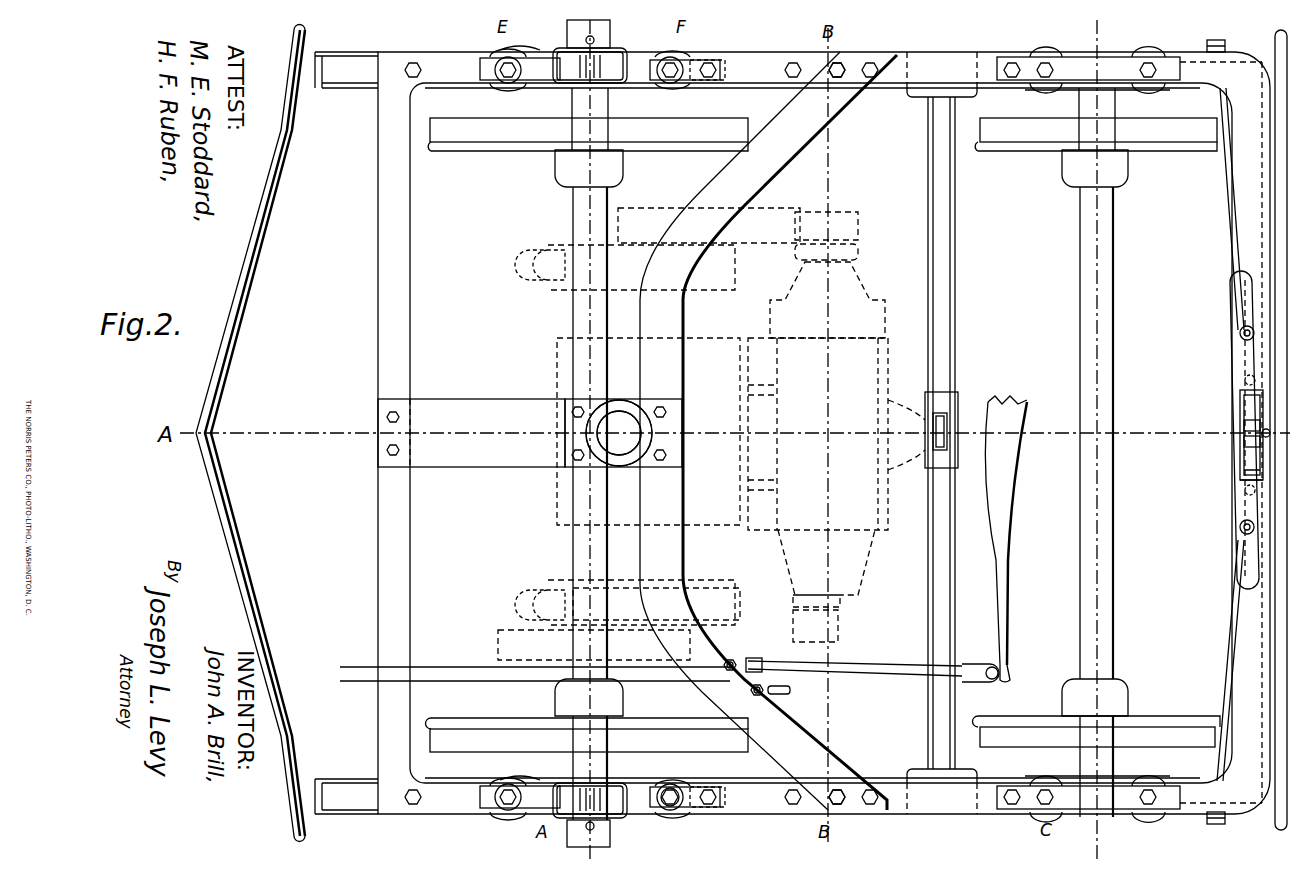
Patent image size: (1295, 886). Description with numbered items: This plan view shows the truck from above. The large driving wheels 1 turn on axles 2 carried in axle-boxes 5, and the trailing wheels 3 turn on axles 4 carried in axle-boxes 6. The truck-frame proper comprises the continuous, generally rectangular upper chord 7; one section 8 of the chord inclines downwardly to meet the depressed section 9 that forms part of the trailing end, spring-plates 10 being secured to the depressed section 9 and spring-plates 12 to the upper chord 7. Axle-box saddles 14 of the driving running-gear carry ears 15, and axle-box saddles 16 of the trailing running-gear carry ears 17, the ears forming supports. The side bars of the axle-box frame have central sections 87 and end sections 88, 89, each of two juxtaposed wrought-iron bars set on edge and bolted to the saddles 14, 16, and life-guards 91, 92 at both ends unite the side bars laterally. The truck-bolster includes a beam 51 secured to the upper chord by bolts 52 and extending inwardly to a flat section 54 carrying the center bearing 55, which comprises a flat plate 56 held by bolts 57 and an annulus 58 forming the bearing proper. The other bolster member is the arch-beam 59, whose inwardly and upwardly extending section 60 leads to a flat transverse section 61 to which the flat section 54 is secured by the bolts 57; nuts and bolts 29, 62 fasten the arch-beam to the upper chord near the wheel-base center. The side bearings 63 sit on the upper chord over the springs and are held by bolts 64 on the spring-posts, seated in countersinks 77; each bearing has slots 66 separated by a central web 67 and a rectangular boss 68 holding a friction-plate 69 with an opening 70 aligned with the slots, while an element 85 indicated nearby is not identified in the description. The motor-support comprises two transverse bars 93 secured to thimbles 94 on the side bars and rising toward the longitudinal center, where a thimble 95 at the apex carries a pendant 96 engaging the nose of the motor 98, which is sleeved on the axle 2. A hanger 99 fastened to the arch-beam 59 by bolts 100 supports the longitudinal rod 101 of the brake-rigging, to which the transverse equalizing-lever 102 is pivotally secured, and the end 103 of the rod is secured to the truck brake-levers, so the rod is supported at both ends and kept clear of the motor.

The large or driving wheels 1 is at (587, 435).
The axles for the driving wheels 2 is at (589, 440).
The trailing wheels 3 is at (1140, 725).
The axles for the trailing wheels 4 is at (1095, 563).
The axle-boxes for the driving-wheels 5 is at (608, 38).
The axle-boxes for the trailing wheels 6 is at (1120, 831).
The upper chord 7 is at (824, 433).
The inclined section of the upper chord 8 is at (942, 433).
The depressed section of the upper chord 9 is at (1218, 330).
The spring-plates 10 is at (1074, 52).
The spring-plates 12 is at (525, 404).
The axle-box saddles of the driving-wheel running-gear 14 is at (545, 57).
The ears or projections 15 is at (598, 435).
The axle-box saddles for the trailing wheels 16 is at (1097, 433).
The ears or projections 17 is at (1093, 443).
The nuts 29 is at (786, 70).
The bolster-beam 51 is at (471, 445).
The bolts 52 is at (387, 417).
The flat section of the bolster-beam 54 is at (676, 428).
The center bearing 55 is at (619, 433).
The flat plate 56 is at (600, 403).
The bolts 57 is at (667, 408).
The annulus 58 is at (633, 412).
The arch-beam 59 is at (648, 431).
The inwardly and upwardly extending section of the arch-beam 60 is at (768, 431).
The flat transverse section of the arch-beam 61 is at (649, 434).
The bolts 62 is at (835, 80).
The side bearings 63 is at (655, 797).
The bolts 64 is at (690, 826).
The openings or slots 66 is at (1262, 433).
The central web 67 is at (1250, 421).
The boss 68 is at (1245, 470).
The friction-plate 69 is at (1250, 442).
The opening in the friction-plate 70 is at (1245, 405).
The recess or countersink 77 is at (1243, 532).
The spring pins 85 is at (1244, 380).
The central sections of the side bars 87 is at (754, 435).
The end section of the side bars 88 is at (355, 98).
The end section of the side bars 89 is at (1230, 52).
The life-guard 91 is at (232, 352).
The life-guard 92 is at (1240, 295).
The transverse bars 93 is at (955, 337).
The thimbles 94 is at (918, 97).
The thimble 95 is at (940, 402).
The pendant 96 is at (944, 428).
The motor 98 is at (836, 427).
The hanger 99 is at (796, 689).
The bolts 100 is at (740, 658).
The longitudinal rod 101 is at (876, 668).
The transverse equalizing-lever 102 is at (1008, 590).
The end of the rod 103 is at (355, 667).